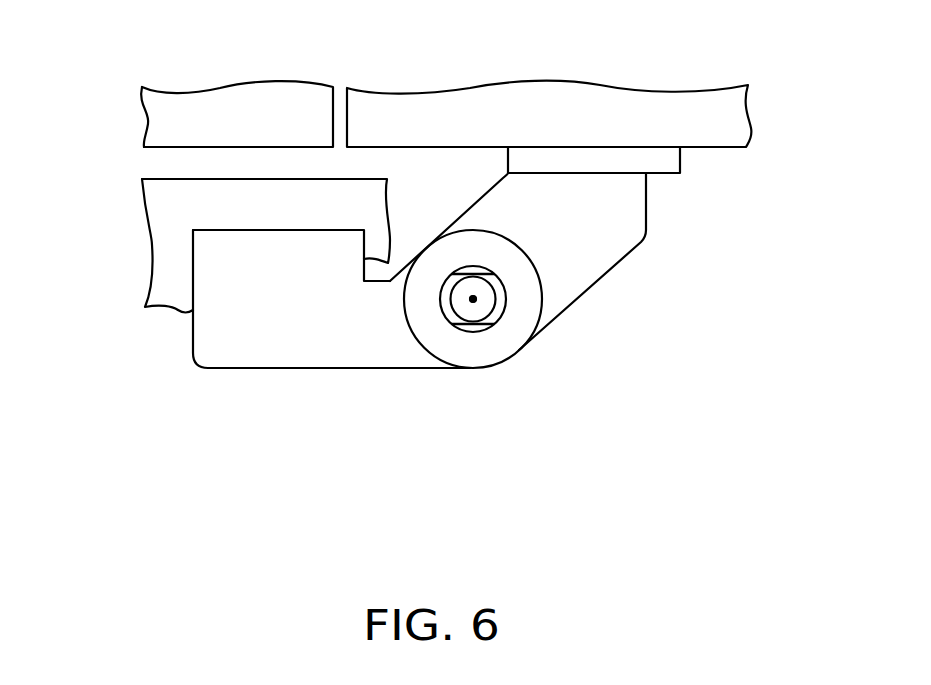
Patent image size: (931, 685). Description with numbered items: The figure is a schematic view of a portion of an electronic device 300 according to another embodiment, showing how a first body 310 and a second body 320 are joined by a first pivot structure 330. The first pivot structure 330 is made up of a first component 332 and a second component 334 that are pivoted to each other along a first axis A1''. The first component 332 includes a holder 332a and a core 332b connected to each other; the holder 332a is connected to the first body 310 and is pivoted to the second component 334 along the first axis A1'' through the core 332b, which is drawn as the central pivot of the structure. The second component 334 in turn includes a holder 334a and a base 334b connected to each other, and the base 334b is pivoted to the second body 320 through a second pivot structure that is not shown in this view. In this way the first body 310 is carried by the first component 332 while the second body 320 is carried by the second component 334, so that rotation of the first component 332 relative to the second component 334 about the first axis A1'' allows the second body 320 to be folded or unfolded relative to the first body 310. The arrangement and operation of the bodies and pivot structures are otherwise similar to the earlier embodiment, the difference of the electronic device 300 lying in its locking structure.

The electronic device 300 is at (818, 573).
The first body 310 is at (163, 237).
The second body 320 is at (162, 122).
The first pivot structure 330 is at (472, 311).
The first component 332 is at (367, 364).
The holder 332a is at (382, 343).
The core 332b is at (473, 312).
The second component 334 is at (549, 289).
The holder 334a is at (582, 248).
The base 334b is at (705, 127).
The first axis A1'' is at (531, 154).